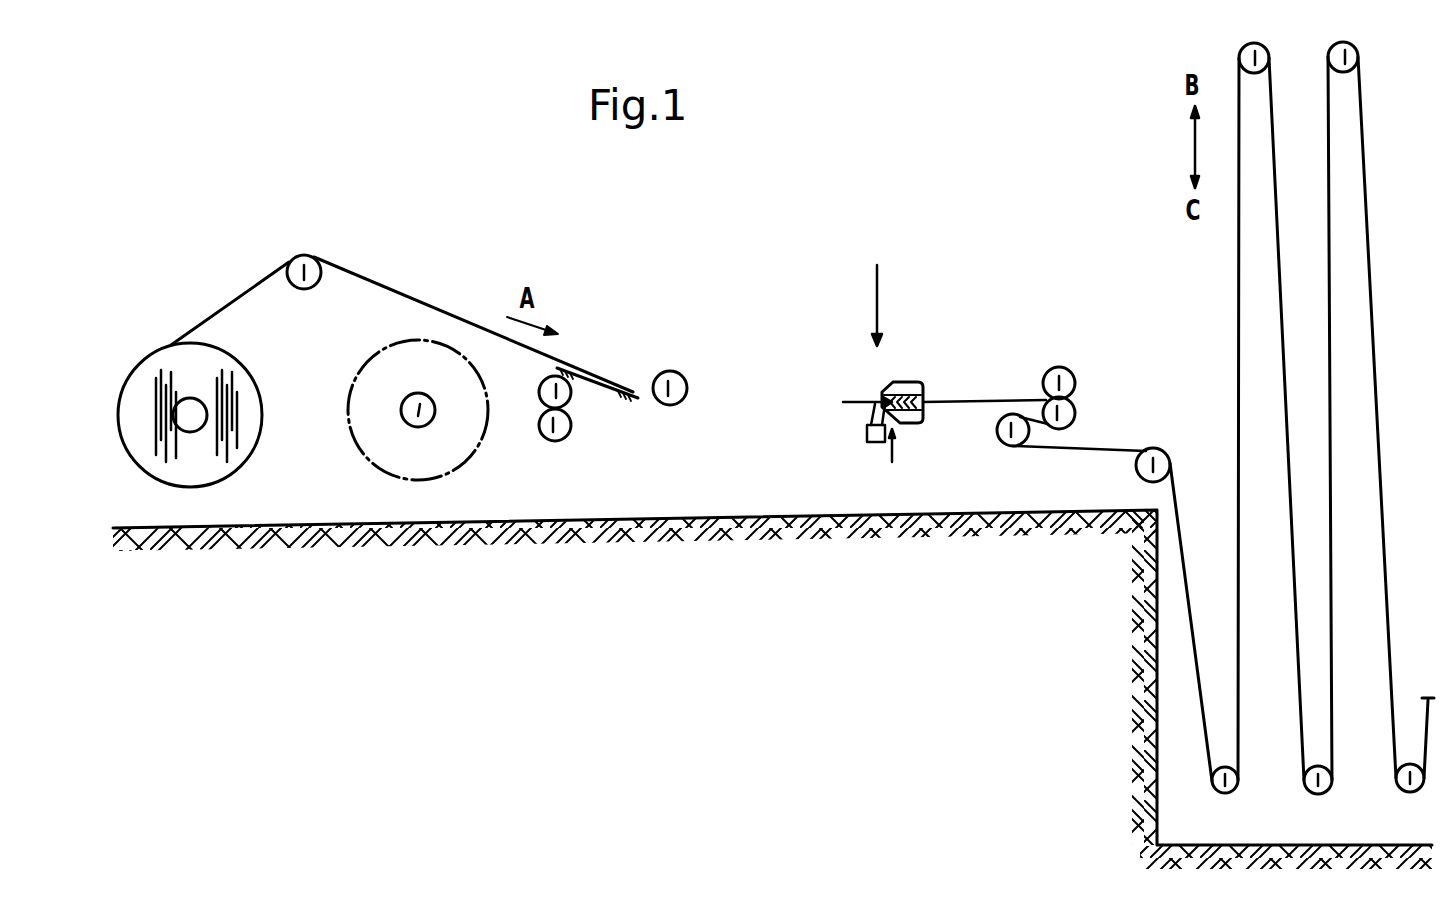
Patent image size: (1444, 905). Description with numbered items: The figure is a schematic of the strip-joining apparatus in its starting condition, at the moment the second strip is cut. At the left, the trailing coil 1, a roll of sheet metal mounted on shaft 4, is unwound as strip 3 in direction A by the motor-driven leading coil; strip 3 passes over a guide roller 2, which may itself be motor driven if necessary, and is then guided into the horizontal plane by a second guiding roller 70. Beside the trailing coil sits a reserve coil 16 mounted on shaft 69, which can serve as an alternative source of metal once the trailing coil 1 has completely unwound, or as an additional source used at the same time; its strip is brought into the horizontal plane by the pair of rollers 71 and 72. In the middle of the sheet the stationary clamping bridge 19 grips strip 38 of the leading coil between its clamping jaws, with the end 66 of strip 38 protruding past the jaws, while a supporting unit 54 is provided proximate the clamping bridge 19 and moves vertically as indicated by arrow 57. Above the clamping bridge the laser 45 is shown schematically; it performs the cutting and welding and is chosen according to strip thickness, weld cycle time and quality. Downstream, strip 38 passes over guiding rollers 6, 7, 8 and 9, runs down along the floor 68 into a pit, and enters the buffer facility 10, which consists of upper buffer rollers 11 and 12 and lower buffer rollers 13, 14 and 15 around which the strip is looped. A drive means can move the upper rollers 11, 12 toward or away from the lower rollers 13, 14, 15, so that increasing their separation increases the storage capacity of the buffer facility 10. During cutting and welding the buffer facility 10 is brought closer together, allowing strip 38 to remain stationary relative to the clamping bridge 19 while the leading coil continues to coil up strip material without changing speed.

The trailing coil 1 is at (181, 362).
The guide roller 2 is at (311, 262).
The strip 3 is at (452, 314).
The shaft 4 is at (197, 417).
The guiding roller 6 is at (1062, 368).
The guiding roller 7 is at (1070, 412).
The guiding roller 8 is at (1009, 447).
The guiding roller 9 is at (1165, 456).
The buffer facility 10 is at (1230, 277).
The buffer roller 11 is at (1243, 53).
The buffer roller 12 is at (1338, 54).
The buffer roller 13 is at (1222, 794).
The buffer roller 14 is at (1308, 788).
The buffer roller 15 is at (1399, 786).
The reserve coil 16 is at (365, 438).
The clamping bridge 19 is at (909, 381).
The strip 38 is at (975, 400).
The laser 45 is at (880, 282).
The supporting unit 54 is at (868, 437).
The arrow 57 is at (900, 449).
The end 66 is at (848, 400).
The floor 68 is at (710, 516).
The shaft 69 is at (435, 412).
The second guiding roller 70 is at (672, 382).
The roller 71 is at (571, 401).
The roller 72 is at (559, 432).